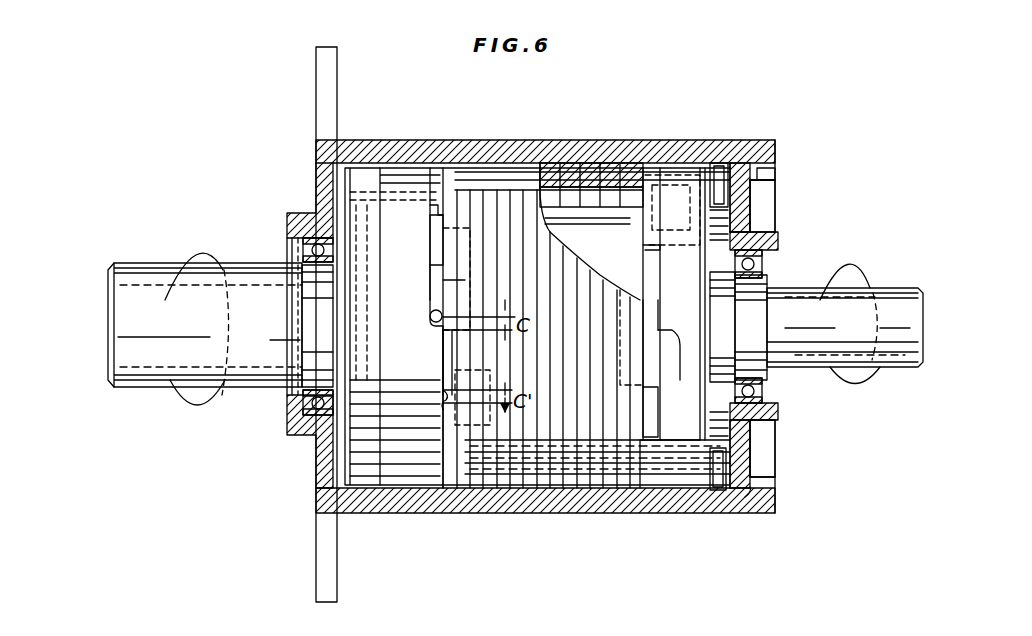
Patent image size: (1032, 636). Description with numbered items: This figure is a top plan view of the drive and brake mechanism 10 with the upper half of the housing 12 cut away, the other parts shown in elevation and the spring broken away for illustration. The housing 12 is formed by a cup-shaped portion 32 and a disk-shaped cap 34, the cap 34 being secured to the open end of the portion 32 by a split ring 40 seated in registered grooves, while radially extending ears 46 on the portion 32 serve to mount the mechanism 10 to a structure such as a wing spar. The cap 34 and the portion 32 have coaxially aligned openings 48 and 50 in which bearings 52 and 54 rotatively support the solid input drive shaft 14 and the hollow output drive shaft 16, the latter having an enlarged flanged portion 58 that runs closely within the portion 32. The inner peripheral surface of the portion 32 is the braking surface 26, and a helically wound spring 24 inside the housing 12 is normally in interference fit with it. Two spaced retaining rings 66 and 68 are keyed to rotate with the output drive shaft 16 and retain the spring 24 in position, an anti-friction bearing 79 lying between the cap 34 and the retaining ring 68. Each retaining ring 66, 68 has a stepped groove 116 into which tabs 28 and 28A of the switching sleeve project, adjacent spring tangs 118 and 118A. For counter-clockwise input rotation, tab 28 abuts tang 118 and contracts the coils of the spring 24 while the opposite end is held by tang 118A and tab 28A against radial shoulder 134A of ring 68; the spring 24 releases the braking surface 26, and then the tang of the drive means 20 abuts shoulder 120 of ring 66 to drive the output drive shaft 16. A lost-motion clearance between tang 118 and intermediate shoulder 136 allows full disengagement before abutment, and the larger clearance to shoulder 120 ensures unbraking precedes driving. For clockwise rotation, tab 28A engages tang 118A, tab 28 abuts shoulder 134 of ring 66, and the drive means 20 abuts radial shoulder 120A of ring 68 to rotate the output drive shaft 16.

The drive and brake mechanism 10 is at (772, 66).
The housing 12 is at (703, 142).
The input drive shaft 14 is at (895, 286).
The output drive shaft 16 is at (175, 260).
The drive means 20 is at (443, 350).
The helically wound spring 24 is at (488, 165).
The braking surface 26 is at (555, 170).
The tab 28 is at (432, 228).
The tab 28A is at (652, 390).
The cup-shaped portion 32 is at (605, 165).
The cap 34 is at (778, 195).
The split ring 40 is at (748, 507).
The ears 46 is at (337, 573).
The opening 48 is at (762, 396).
The opening 50 is at (302, 405).
The bearing 52 is at (762, 256).
The bearing 54 is at (315, 243).
The flanged portion 58 is at (340, 457).
The retaining ring 66 is at (393, 170).
The retaining ring 68 is at (668, 190).
The anti-friction bearing 79 is at (720, 175).
The stepped groove 116 is at (430, 263).
The tang 118 is at (430, 291).
The tang 118A is at (650, 336).
The shoulder 120 is at (445, 393).
The radial shoulder 120A is at (642, 245).
The shoulder 134 is at (432, 200).
The radial shoulder 134A is at (645, 450).
The intermediate shoulder 136 is at (430, 321).